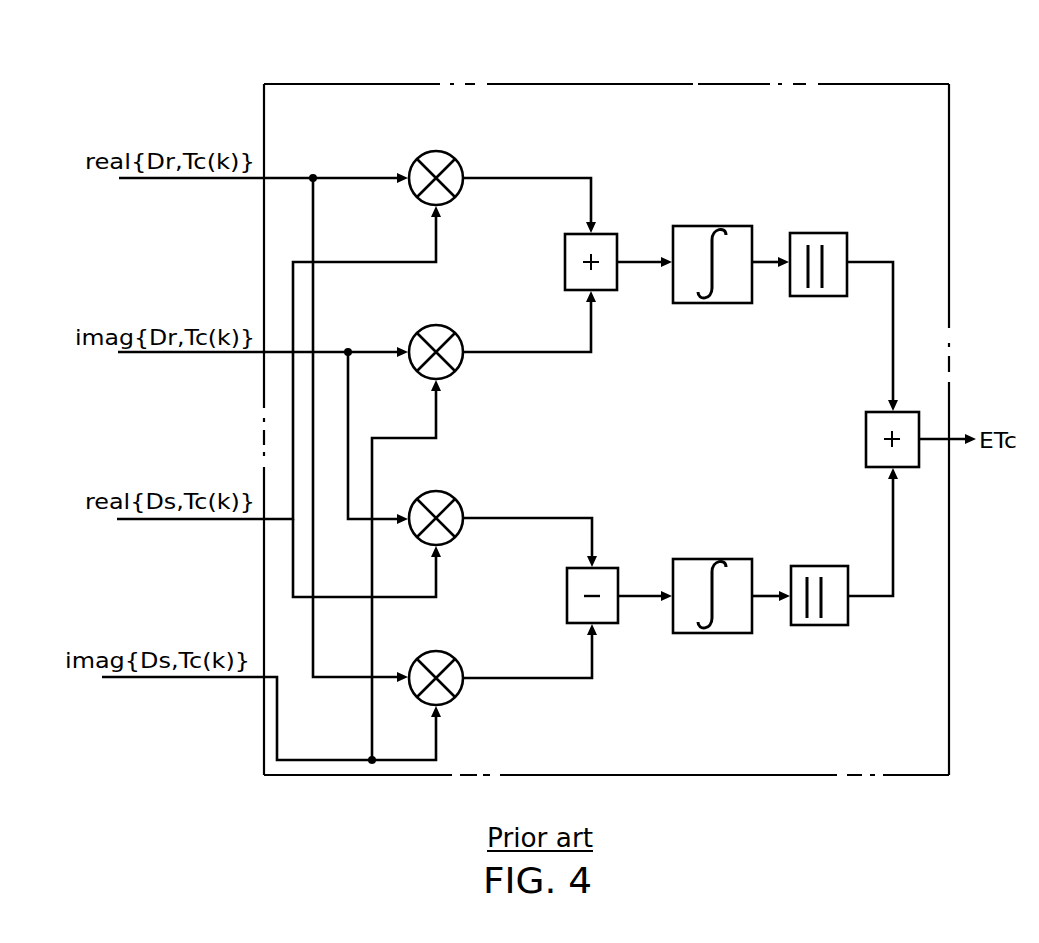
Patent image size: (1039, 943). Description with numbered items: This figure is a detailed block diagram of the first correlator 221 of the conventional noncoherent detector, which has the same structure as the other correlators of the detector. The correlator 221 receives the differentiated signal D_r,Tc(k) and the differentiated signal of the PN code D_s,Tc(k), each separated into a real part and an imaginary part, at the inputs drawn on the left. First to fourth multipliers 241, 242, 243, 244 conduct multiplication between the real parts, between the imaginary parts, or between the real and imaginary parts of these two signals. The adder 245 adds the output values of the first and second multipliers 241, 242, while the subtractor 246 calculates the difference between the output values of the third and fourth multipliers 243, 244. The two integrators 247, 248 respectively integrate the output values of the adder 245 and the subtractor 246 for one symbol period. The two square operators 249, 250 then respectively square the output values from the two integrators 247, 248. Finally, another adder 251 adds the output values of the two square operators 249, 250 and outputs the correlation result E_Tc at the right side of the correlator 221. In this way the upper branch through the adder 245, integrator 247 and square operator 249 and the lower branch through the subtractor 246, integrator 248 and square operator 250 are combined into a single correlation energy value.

The first correlator 221 is at (593, 84).
The first multiplier 241 is at (443, 152).
The second multiplier 242 is at (457, 366).
The third multiplier 243 is at (457, 532).
The fourth multiplier 244 is at (457, 692).
The adder 245 is at (605, 232).
The subtractor 246 is at (610, 623).
The integrator 247 is at (700, 226).
The integrator 248 is at (725, 633).
The square operator 249 is at (818, 233).
The square operator 250 is at (850, 617).
The adder 251 is at (866, 430).